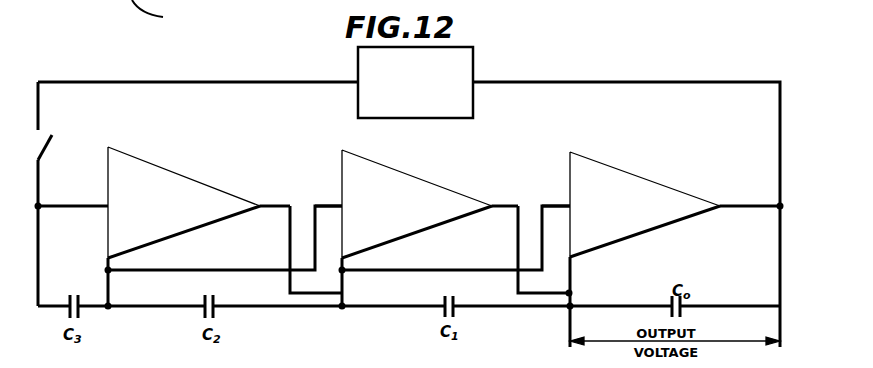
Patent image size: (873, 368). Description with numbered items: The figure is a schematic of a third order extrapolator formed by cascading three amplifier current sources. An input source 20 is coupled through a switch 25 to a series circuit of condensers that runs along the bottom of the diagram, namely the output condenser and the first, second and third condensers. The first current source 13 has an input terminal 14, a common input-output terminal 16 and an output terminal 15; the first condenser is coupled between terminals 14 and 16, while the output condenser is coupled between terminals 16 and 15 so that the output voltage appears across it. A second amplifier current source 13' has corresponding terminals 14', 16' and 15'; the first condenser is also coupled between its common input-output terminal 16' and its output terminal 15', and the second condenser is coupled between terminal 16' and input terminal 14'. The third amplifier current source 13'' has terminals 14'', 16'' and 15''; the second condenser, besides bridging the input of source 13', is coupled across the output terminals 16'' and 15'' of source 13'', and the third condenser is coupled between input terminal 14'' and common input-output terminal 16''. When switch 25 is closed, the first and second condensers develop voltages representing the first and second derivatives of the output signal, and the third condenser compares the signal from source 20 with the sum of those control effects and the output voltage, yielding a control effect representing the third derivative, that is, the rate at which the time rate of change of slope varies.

The amplifier current source 13 is at (645, 204).
The amplifier current source 13' is at (417, 204).
The third amplifier current source 13'' is at (184, 202).
The input terminal 14 is at (556, 190).
The input terminal 14' is at (327, 190).
The input terminal 14'' is at (73, 192).
The output terminal 15 is at (750, 222).
The output terminal 15' is at (507, 190).
The output terminal 15'' is at (277, 190).
The common input-output terminal 16 is at (645, 240).
The common input-output terminal 16' is at (417, 235).
The common input-output terminal 16'' is at (184, 236).
The input source 20 is at (358, 85).
The switch 25 is at (85, 152).